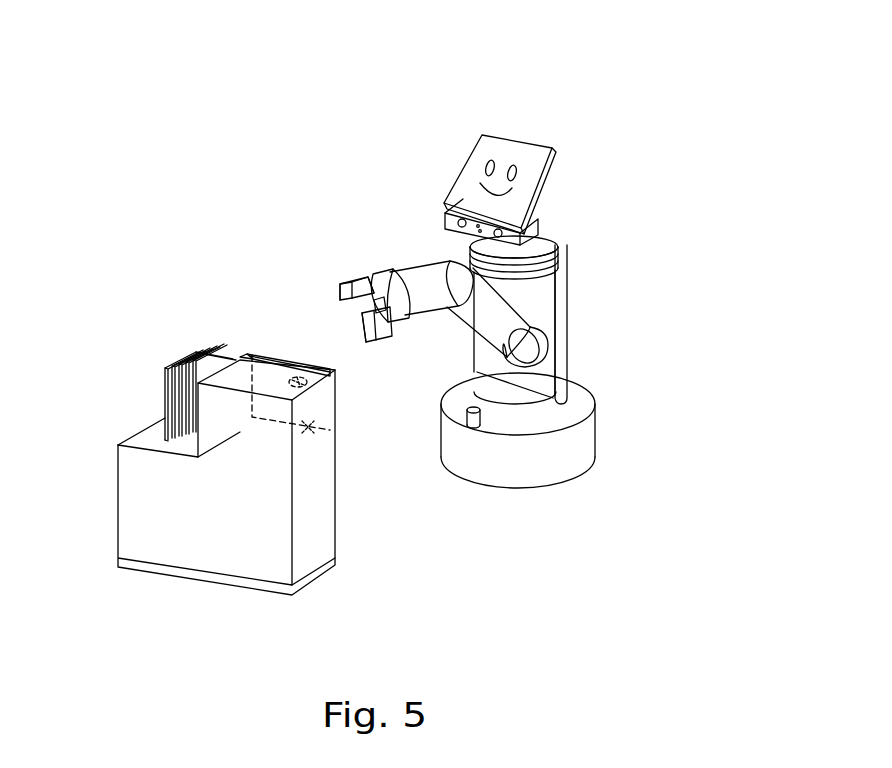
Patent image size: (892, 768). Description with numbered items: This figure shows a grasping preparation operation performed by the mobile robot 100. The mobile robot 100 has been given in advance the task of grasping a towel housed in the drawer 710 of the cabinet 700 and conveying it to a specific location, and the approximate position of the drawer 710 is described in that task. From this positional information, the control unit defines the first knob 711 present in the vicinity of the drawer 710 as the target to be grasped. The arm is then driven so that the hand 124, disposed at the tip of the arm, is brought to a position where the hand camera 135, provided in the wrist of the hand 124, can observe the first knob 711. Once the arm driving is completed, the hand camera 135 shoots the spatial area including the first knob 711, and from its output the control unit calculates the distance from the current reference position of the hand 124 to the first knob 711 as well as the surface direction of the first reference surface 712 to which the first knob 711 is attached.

The mobile robot 100 is at (450, 98).
The hand 124 is at (378, 333).
The hand camera 135 is at (385, 272).
The cabinet 700 is at (127, 507).
The drawer 710 is at (263, 352).
The first knob 711 is at (307, 390).
The first reference surface 712 is at (308, 427).